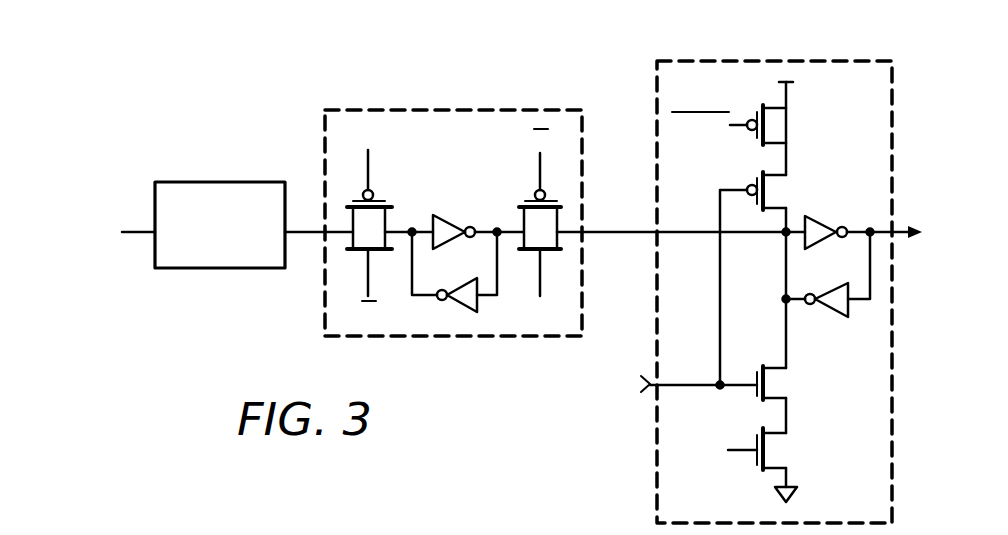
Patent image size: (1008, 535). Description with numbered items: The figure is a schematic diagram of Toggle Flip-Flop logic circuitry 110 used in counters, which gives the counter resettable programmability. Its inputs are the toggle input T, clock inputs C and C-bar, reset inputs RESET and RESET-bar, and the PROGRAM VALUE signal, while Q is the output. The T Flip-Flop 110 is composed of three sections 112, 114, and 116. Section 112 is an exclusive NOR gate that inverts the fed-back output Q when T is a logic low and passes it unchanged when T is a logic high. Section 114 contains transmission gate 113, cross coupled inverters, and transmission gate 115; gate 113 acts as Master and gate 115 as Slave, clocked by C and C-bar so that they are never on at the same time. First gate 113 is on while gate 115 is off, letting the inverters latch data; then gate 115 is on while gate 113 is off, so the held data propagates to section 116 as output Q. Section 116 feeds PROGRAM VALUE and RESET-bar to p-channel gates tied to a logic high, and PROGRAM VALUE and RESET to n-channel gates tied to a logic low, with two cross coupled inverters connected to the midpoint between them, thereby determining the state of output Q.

The Toggle Flip-Flop logic circuitry 110 is at (246, 86).
The exclusive NOR gate 112 is at (219, 182).
The transmission gate 113 is at (377, 200).
The section 114 is at (433, 110).
The transmission gate 115 is at (530, 200).
The section 116 is at (721, 61).